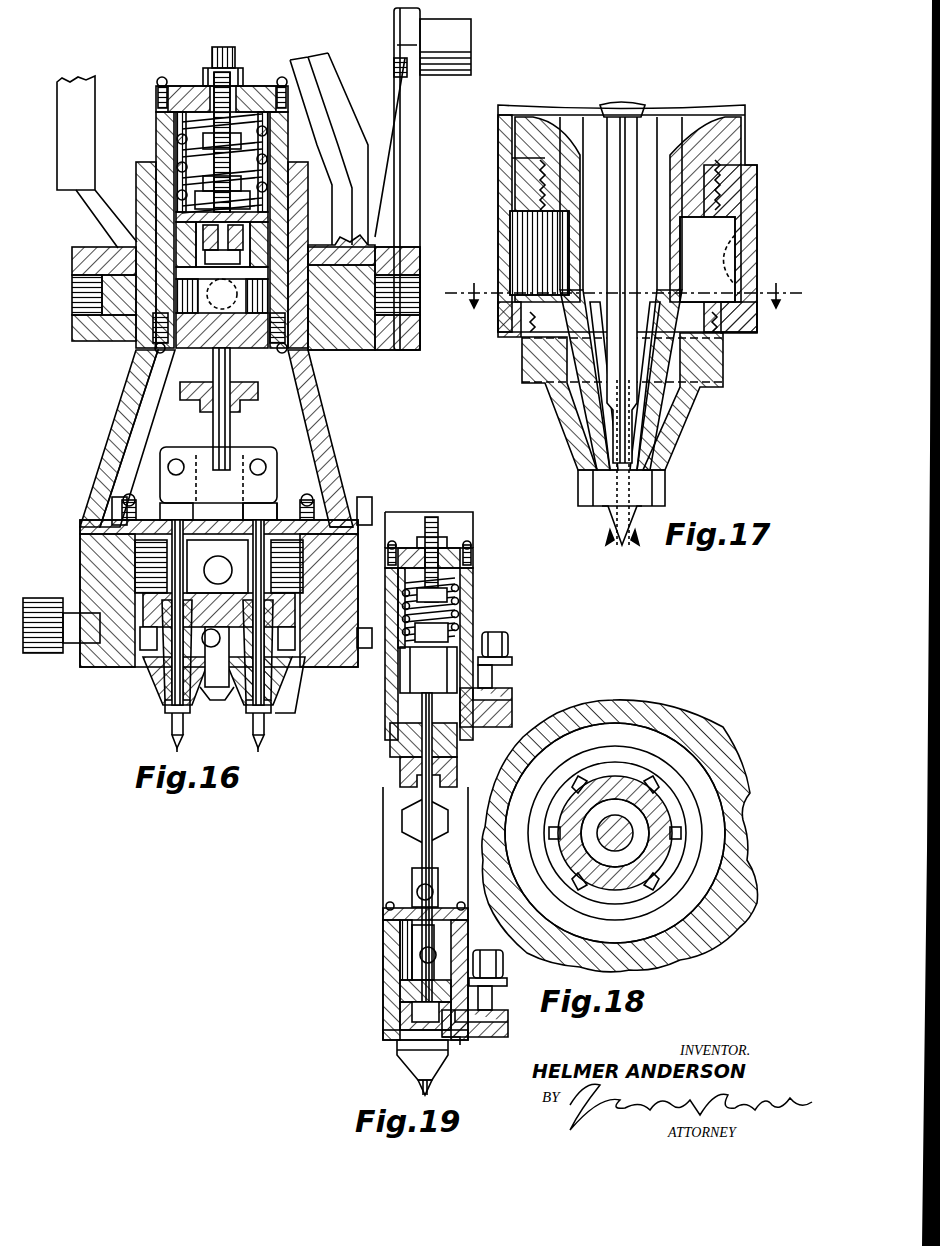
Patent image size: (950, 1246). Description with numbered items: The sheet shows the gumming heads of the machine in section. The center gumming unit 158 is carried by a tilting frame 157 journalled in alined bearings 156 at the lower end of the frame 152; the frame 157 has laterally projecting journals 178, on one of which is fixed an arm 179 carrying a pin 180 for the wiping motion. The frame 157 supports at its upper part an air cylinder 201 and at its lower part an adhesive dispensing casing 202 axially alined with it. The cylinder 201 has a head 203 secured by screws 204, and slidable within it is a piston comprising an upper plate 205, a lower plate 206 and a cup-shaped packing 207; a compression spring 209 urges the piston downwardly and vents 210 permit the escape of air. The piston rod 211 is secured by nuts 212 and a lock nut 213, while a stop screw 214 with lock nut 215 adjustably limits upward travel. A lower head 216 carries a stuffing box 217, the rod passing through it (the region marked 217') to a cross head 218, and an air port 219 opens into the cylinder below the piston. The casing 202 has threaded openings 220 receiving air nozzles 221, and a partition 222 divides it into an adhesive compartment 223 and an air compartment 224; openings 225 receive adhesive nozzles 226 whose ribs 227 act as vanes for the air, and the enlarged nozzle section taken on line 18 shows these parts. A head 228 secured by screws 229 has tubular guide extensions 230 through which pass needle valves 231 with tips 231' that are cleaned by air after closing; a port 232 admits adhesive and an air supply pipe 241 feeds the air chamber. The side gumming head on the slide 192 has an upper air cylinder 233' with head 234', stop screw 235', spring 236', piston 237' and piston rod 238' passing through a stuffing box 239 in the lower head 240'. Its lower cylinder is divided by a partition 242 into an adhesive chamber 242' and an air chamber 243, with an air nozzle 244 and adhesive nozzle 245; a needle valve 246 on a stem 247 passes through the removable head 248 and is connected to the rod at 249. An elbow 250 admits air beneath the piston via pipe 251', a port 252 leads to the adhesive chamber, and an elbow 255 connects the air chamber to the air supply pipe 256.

In FIG. 16, the frame 152 is at (73, 85).
In FIG. 16, the alined bearings 156 is at (108, 338).
In FIG. 16, the tilting frame 157 is at (335, 468).
In FIG. 16, the central gumming unit 158 is at (293, 693).
In FIG. 17, the central gumming unit 158 is at (748, 158).
In FIG. 18, the central gumming unit 158 is at (630, 706).
In FIG. 16, the laterally projecting journals 178 is at (80, 282).
In FIG. 17, the laterally projecting journals 178 is at (498, 302).
In FIG. 16, the arm 179 is at (412, 152).
In FIG. 16, the pin 180 is at (471, 46).
In FIG. 19, the slide 192 is at (451, 776).
In FIG. 16, the air cylinder 201 is at (158, 120).
In FIG. 18, the air cylinder 201 is at (722, 932).
In FIG. 16, the adhesive dispensing casing 202 is at (165, 665).
In FIG. 16, the head 203 is at (185, 86).
In FIG. 16, the screws 204 is at (170, 86).
In FIG. 16, the upper plate 205 is at (200, 230).
In FIG. 16, the lower plate 206 is at (185, 262).
In FIG. 16, the cup-shaped packing 207 is at (200, 246).
In FIG. 16, the compression spring 209 is at (188, 126).
In FIG. 16, the vents 210 is at (193, 84).
In FIG. 16, the piston rod 211 is at (212, 432).
In FIG. 16, the nuts 212 is at (200, 196).
In FIG. 16, the lock nut 213 is at (213, 187).
In FIG. 16, the stop screw 214 is at (230, 50).
In FIG. 16, the lock nut 215 is at (208, 70).
In FIG. 16, the head 216 is at (150, 405).
In FIG. 16, the stuffing box 217 is at (214, 438).
In FIG. 16, the cross piece 217' is at (201, 400).
In FIG. 16, the cross head 218 is at (245, 458).
In FIG. 16, the air port 219 is at (240, 295).
In FIG. 16, the threaded openings 220 is at (215, 683).
In FIG. 17, the threaded openings 220 is at (537, 321).
In FIG. 16, the air nozzles 221 is at (167, 690).
In FIG. 17, the air nozzles 221 is at (593, 450).
In FIG. 18, the air nozzles 221 is at (690, 868).
In FIG. 16, the partition 222 is at (140, 620).
In FIG. 17, the partition 222 is at (504, 171).
In FIG. 16, the adhesive compartment 223 is at (148, 573).
In FIG. 16, the air compartment 224 is at (290, 673).
In FIG. 17, the air compartment 224 is at (522, 245).
In FIG. 18, the air compartment 224 is at (697, 893).
In FIG. 16, the screw threaded openings 225 is at (143, 637).
In FIG. 17, the screw threaded openings 225 is at (537, 191).
In FIG. 16, the adhesive nozzles 226 is at (250, 722).
In FIG. 17, the adhesive nozzles 226 is at (645, 474).
In FIG. 18, the adhesive nozzles 226 is at (660, 813).
In FIG. 17, the ribs 227 is at (680, 420).
In FIG. 18, the ribs 227 is at (588, 777).
In FIG. 16, the head 228 is at (275, 505).
In FIG. 16, the screws 229 is at (112, 520).
In FIG. 16, the tubular guide extensions 230 is at (158, 518).
In FIG. 16, the needle valves 231 is at (211, 737).
In FIG. 17, the needle valves 231 is at (576, 282).
In FIG. 18, the needle valves 231 is at (680, 794).
In FIG. 16, the tips 231' is at (217, 744).
In FIG. 17, the tips 231' is at (574, 331).
In FIG. 19, the tips 231' is at (455, 1090).
In FIG. 16, the port 232 is at (225, 520).
In FIG. 19, the upper air cylinder 233' is at (467, 610).
In FIG. 19, the head 234' is at (464, 517).
In FIG. 19, the adjustable stop screw 235' is at (444, 534).
In FIG. 19, the spring 236' is at (458, 640).
In FIG. 19, the piston 237' is at (477, 653).
In FIG. 19, the piston rod 238' is at (391, 848).
In FIG. 16, the stuffing box 239 is at (180, 662).
In FIG. 19, the stuffing box 239 is at (403, 770).
In FIG. 19, the lower head 240' is at (396, 740).
In FIG. 19, the air supply pipe 241 is at (382, 975).
In FIG. 19, the partition 242 is at (496, 1011).
In FIG. 19, the adhesive chamber 242' is at (376, 952).
In FIG. 19, the air chamber 243 is at (447, 1037).
In FIG. 19, the air nozzle 244 is at (407, 1058).
In FIG. 19, the adhesive nozzle 245 is at (415, 1023).
In FIG. 19, the needle valve 246 is at (422, 1088).
In FIG. 19, the stem 247 is at (423, 1002).
In FIG. 19, the removable head 248 is at (388, 923).
In FIG. 19, the connection 249 is at (412, 892).
In FIG. 19, the elbow 250 is at (512, 702).
In FIG. 19, the air pipe 251' is at (522, 648).
In FIG. 19, the port 252 is at (417, 947).
In FIG. 19, the elbow 255 is at (500, 1034).
In FIG. 19, the air supply pipe 256 is at (503, 967).
In FIG. 17, the section line 18 is at (626, 295).